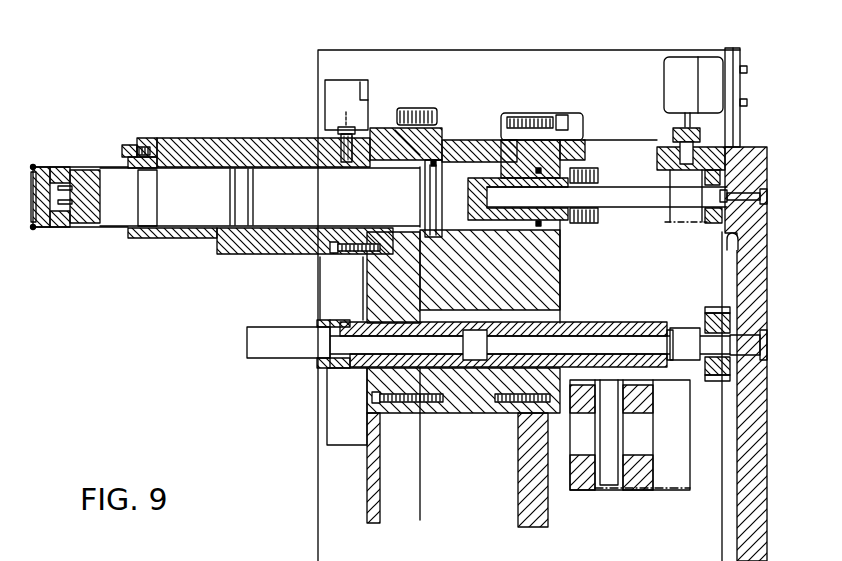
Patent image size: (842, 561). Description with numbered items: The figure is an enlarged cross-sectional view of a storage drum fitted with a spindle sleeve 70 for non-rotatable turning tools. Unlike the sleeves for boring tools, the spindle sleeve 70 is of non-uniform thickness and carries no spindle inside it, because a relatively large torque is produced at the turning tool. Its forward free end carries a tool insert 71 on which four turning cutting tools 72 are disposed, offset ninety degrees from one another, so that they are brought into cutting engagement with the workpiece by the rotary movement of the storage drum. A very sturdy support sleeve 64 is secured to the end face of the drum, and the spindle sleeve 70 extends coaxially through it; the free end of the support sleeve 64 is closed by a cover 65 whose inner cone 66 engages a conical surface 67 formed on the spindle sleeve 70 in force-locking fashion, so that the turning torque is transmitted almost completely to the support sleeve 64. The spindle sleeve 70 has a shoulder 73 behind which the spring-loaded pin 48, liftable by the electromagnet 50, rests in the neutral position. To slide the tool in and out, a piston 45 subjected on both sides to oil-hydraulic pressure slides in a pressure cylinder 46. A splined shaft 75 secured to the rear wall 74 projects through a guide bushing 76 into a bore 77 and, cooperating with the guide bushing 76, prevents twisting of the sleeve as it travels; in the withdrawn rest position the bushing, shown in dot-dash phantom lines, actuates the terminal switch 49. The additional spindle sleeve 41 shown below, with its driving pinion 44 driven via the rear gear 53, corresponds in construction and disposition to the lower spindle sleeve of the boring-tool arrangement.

The lower spindle sleeve 41 is at (353, 370).
The driving pinion 44 is at (718, 378).
The piston 45 is at (437, 158).
The pressure cylinder 46 is at (477, 170).
The spring-loaded pin 48 is at (343, 120).
The terminal switch 49 is at (691, 70).
The electromagnet 50 is at (343, 93).
The rear gear 53 is at (637, 475).
The support sleeve 64 is at (223, 140).
The cover 65 is at (118, 145).
The inner cone 66 is at (150, 157).
The conical surface 67 is at (148, 217).
The spindle sleeve 70 is at (293, 183).
The tool insert 71 is at (33, 165).
The turning cutting tools 72 is at (33, 229).
The shoulder 73 is at (253, 217).
The rear wall 74 is at (757, 152).
The splined shaft 75 is at (627, 193).
The guide bushing 76 is at (588, 170).
The bore 77 is at (565, 222).